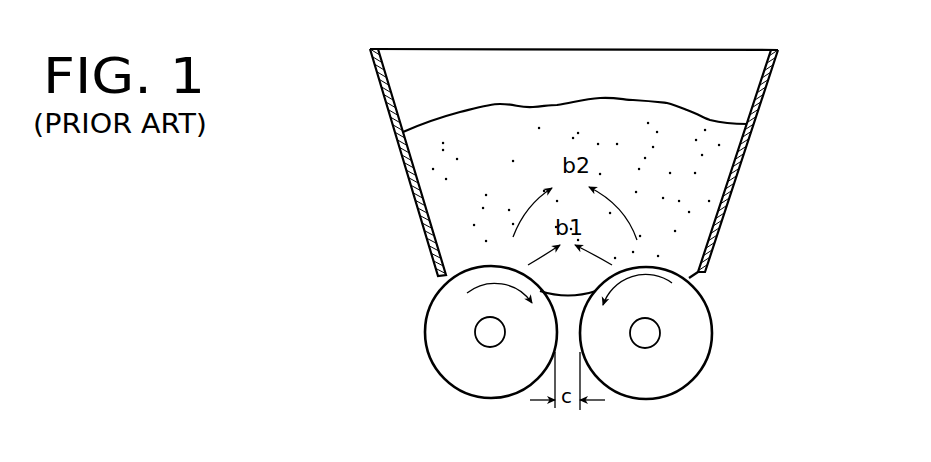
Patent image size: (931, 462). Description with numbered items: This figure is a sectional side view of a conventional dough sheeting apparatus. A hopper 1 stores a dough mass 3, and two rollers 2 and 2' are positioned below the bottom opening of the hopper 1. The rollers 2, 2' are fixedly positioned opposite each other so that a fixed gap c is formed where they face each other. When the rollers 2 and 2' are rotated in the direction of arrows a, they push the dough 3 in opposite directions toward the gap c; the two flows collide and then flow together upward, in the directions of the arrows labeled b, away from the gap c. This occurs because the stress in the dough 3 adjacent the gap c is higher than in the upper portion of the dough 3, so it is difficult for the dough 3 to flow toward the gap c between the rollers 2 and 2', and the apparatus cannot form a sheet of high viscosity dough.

The hopper 1 is at (763, 98).
The roller 2 is at (700, 330).
The roller 2' is at (430, 332).
The dough mass 3 is at (605, 98).